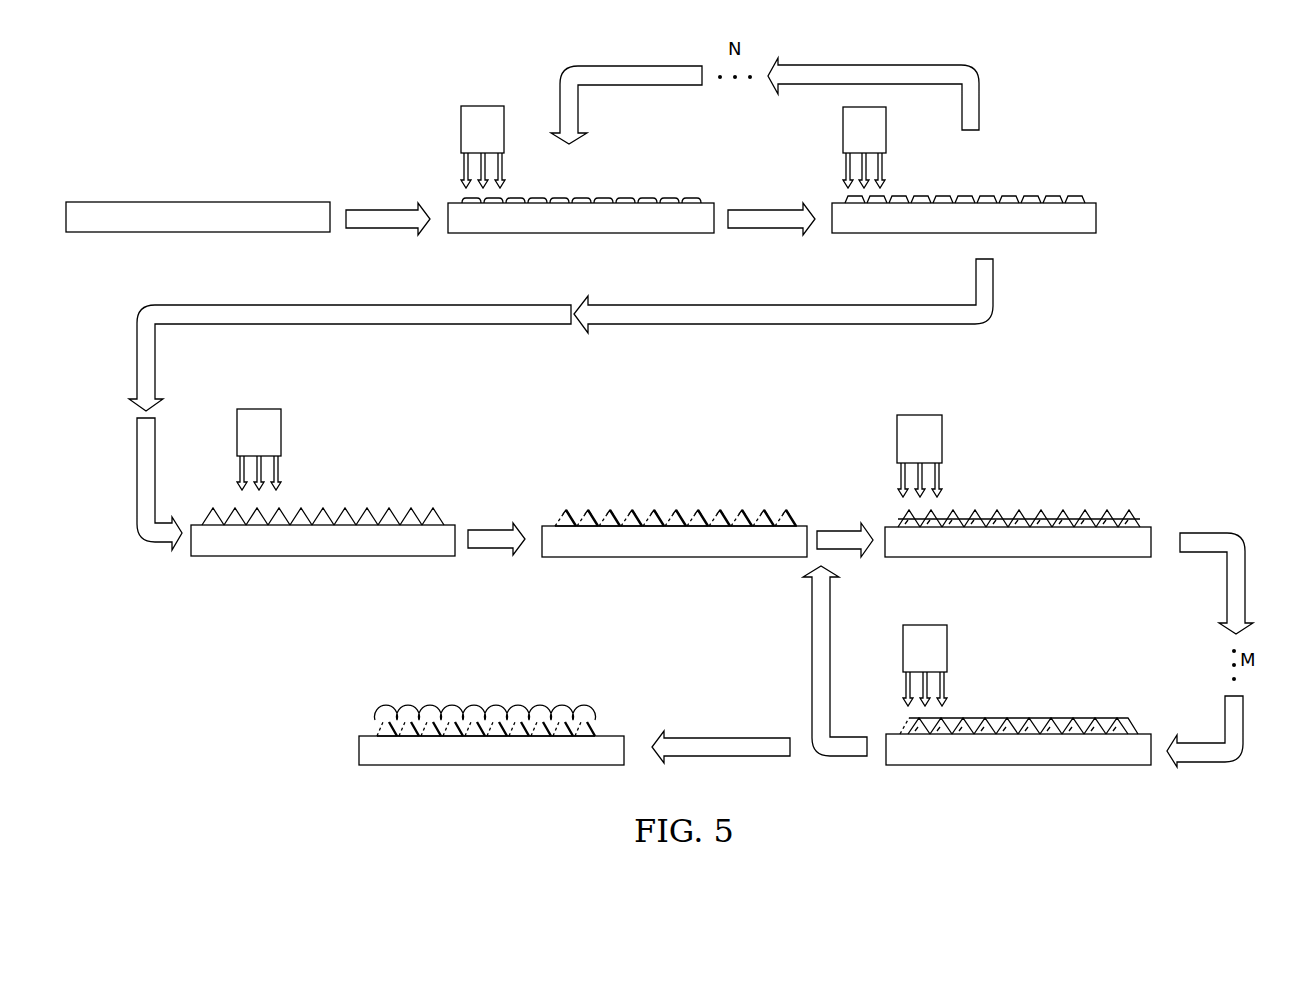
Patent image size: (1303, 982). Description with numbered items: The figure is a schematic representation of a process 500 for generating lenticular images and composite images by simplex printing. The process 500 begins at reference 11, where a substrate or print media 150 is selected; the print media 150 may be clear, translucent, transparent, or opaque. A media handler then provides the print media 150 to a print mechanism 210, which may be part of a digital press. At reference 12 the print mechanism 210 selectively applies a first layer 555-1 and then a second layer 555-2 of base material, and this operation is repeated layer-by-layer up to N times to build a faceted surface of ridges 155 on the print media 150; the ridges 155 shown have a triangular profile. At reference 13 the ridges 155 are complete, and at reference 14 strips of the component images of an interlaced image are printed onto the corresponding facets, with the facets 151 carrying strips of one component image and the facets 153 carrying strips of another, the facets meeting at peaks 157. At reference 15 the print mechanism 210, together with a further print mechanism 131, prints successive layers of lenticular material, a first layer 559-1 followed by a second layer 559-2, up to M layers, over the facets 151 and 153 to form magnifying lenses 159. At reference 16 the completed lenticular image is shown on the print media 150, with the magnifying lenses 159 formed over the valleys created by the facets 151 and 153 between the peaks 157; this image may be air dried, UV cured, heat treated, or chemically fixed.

The process 500 is at (93, 82).
The reference (substrate selection operation) 11 is at (299, 173).
The reference (layer application operation) 12 is at (991, 73).
The reference (faceted surface completion operation) 13 is at (403, 433).
The reference (component image printing operation) 14 is at (767, 429).
The reference (lenticular material layering operation) 15 is at (1243, 504).
The reference (completed lenticular image) 16 is at (598, 679).
The print media 150 is at (95, 233).
The print mechanism 210 is at (461, 130).
The print mechanism 131 is at (903, 650).
The layer of base material 555-1 is at (585, 198).
The layer of base material 555-2 is at (963, 196).
The ridges 155 is at (348, 512).
The facets 151 is at (582, 518).
The facets 153 is at (703, 518).
The peaks 157 is at (588, 510).
The magnifying lenses 159 is at (520, 708).
The layer of lenticular material 559-1 is at (1031, 521).
The layer of lenticular material 559-2 is at (1029, 718).